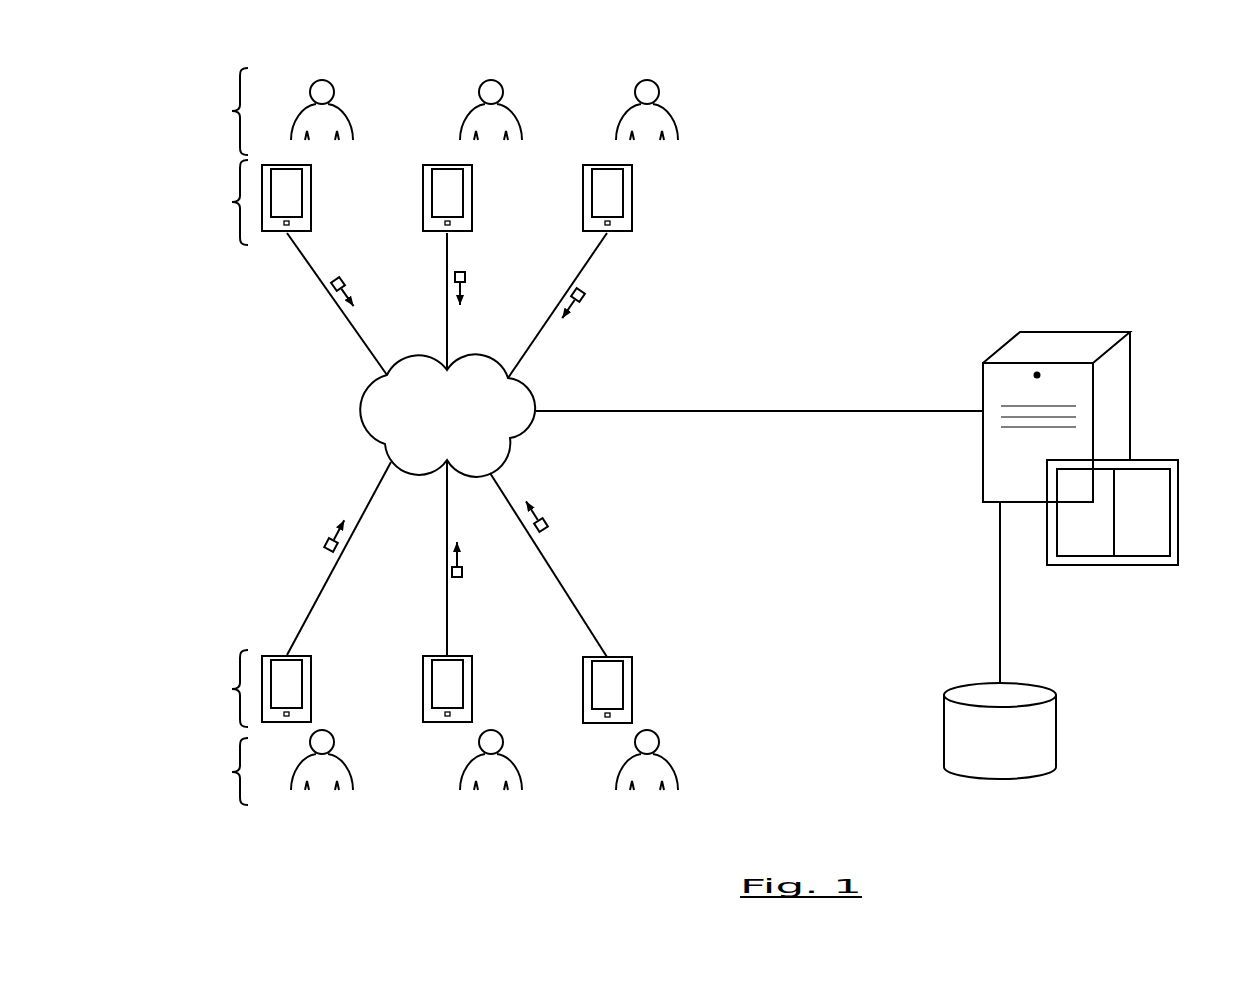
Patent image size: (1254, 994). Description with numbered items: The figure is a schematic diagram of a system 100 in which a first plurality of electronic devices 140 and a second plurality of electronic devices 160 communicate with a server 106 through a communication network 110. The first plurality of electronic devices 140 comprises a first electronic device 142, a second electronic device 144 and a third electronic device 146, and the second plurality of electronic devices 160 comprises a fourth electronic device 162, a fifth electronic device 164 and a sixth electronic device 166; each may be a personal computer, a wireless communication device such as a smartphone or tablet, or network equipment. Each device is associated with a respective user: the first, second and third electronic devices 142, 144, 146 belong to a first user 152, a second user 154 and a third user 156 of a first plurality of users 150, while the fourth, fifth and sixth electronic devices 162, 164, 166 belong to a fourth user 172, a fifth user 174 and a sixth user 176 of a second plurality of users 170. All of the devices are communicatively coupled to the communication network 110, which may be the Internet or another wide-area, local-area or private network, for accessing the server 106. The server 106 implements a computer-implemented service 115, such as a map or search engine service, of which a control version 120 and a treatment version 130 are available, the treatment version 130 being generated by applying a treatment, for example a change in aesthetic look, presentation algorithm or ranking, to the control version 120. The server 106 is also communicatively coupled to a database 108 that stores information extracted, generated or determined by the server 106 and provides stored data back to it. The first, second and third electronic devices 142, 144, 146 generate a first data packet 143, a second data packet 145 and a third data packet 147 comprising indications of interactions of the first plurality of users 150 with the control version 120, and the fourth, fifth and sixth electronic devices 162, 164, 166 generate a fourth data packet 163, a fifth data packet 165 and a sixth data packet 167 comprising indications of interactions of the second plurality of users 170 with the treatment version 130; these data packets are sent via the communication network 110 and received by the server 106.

The system 100 is at (983, 112).
The server 106 is at (1130, 352).
The database 108 is at (981, 749).
The communication network 110 is at (467, 427).
The computer-implemented service 115 is at (1178, 550).
The control version 120 is at (1067, 524).
The treatment version 130 is at (1124, 524).
The first plurality of electronic devices 140 is at (219, 202).
The first electronic device 142 is at (311, 214).
The first data packet 143 is at (343, 277).
The second electronic device 144 is at (472, 214).
The second data packet 145 is at (465, 272).
The third electronic device 146 is at (632, 214).
The third data packet 147 is at (585, 289).
The first plurality of users 150 is at (219, 111).
The first user 152 is at (332, 85).
The second user 154 is at (501, 85).
The third user 156 is at (657, 85).
The second plurality of electronic devices 160 is at (219, 688).
The fourth electronic device 162 is at (311, 686).
The fourth data packet 163 is at (326, 540).
The fifth electronic device 164 is at (472, 686).
The fifth data packet 165 is at (462, 577).
The sixth electronic device 166 is at (632, 686).
The sixth data packet 167 is at (546, 531).
The second plurality of users 170 is at (219, 771).
The fourth user 172 is at (333, 737).
The fifth user 174 is at (502, 737).
The sixth user 176 is at (658, 737).